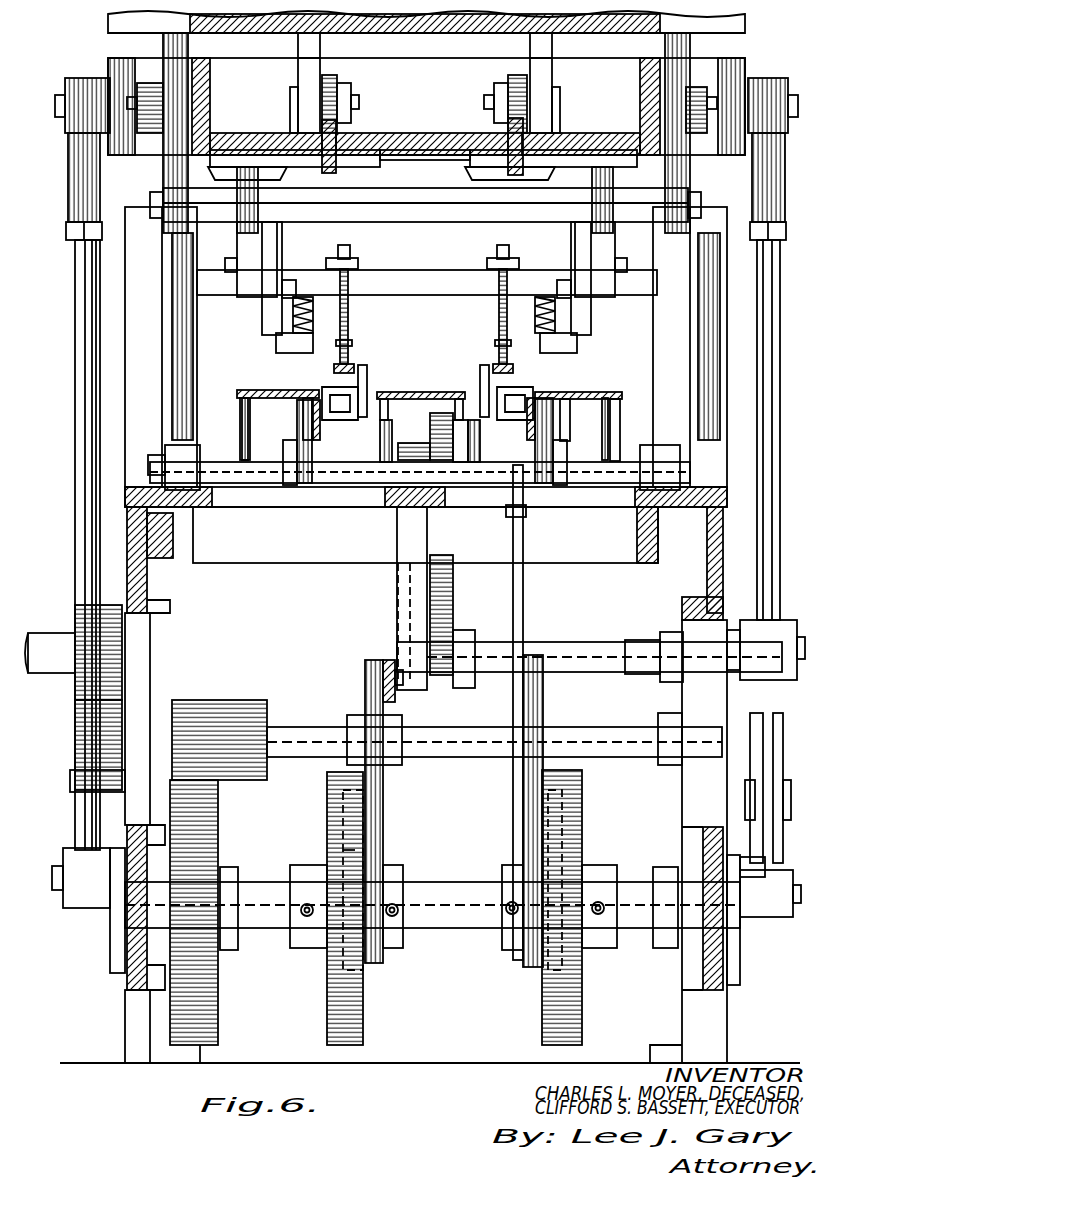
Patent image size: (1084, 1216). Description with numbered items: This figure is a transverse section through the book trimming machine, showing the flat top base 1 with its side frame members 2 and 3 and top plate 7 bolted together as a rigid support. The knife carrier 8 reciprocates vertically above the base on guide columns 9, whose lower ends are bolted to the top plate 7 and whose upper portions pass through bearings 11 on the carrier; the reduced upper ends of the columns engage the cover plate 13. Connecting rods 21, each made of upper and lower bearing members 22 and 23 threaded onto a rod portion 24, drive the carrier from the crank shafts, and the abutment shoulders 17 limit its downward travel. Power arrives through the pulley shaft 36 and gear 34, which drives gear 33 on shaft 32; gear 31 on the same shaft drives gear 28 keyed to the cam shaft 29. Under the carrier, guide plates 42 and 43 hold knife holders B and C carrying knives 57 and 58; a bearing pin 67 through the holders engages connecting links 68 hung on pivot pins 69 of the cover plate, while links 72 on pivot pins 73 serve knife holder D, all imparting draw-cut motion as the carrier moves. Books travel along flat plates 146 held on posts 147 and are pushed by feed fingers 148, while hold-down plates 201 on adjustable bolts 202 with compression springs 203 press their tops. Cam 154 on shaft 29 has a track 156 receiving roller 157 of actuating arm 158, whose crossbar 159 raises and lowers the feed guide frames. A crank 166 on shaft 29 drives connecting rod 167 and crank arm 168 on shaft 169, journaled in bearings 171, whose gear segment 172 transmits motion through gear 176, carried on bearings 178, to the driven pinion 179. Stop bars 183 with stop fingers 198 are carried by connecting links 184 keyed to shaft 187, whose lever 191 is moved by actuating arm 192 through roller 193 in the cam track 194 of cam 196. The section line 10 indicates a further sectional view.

The flat top base 1 is at (123, 1005).
The side frame member 2 is at (143, 1025).
The side frame member 3 is at (723, 1000).
The top plate 7 is at (127, 498).
The knife carrier 8 is at (118, 57).
The guide column 9 is at (155, 360).
The section line 10 is at (520, 432).
The bearing 11 is at (107, 62).
The cover plate 13 is at (106, 18).
The abutment shoulder 17 is at (137, 206).
The connecting rod 21 is at (73, 421).
The upper bearing member 22 is at (70, 140).
The lower bearing member 23 is at (76, 845).
The rod portion 24 is at (76, 453).
The gear 28 is at (220, 1014).
The cam shaft 29 is at (277, 930).
The gear 31 is at (230, 672).
The shaft 32 is at (278, 727).
The gear 33 is at (88, 776).
The gear 34 is at (76, 706).
The pulley shaft 36 is at (58, 612).
The knife holder guide plate 42 is at (340, 190).
The knife holder guide plate 43 is at (520, 186).
The knife 57 is at (270, 315).
The knife 58 is at (590, 315).
The bearing pin 67 is at (425, 169).
The connecting link 68 is at (177, 165).
The pivot pin 69 is at (190, 103).
The connecting link 72 is at (337, 125).
The pivot pin 73 is at (338, 90).
The flat plate 146 is at (255, 390).
The post 147 is at (242, 415).
The feed finger 148 is at (362, 372).
The cam 154 is at (365, 1026).
The track 156 is at (343, 850).
The roller 157 is at (343, 820).
The actuating arm 158 is at (384, 812).
The crossbar 159 is at (384, 660).
The crank 166 is at (766, 920).
The connecting rod 167 is at (776, 812).
The crank arm 168 is at (777, 628).
The shaft 169 is at (602, 642).
The bearing 171 is at (397, 584).
The gear segment 172 is at (455, 606).
The gear 176 is at (460, 465).
The bearing 178 is at (386, 465).
The driven pinion 179 is at (442, 412).
The stop bar 183 is at (313, 430).
The connecting link 184 is at (302, 487).
The shaft 187 is at (392, 465).
The lever 191 is at (527, 515).
The actuating arm 192 is at (524, 615).
The roller 193 is at (545, 805).
The cam track 194 is at (546, 1018).
The cam 196 is at (582, 1012).
The stop finger 198 is at (345, 390).
The hold-down plate 201 is at (350, 346).
The adjustable bolt 202 is at (345, 258).
The compression spring 203 is at (345, 330).